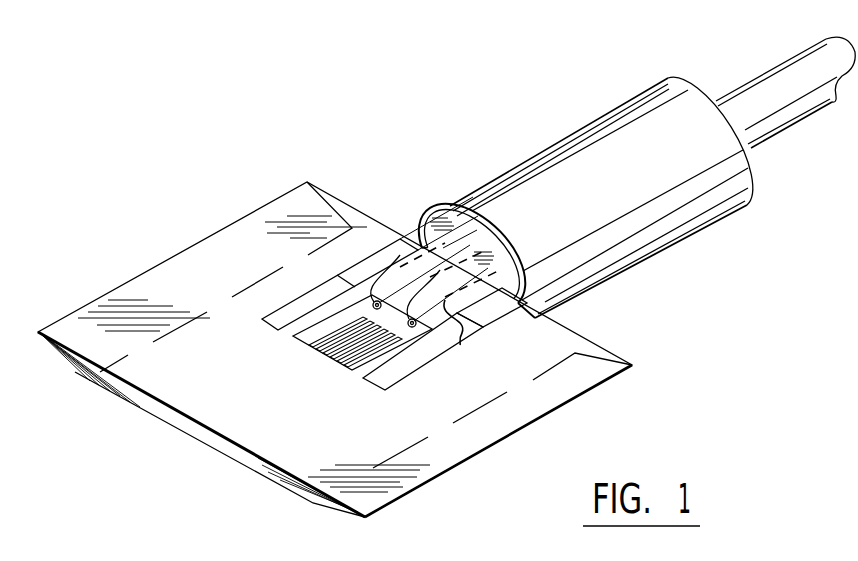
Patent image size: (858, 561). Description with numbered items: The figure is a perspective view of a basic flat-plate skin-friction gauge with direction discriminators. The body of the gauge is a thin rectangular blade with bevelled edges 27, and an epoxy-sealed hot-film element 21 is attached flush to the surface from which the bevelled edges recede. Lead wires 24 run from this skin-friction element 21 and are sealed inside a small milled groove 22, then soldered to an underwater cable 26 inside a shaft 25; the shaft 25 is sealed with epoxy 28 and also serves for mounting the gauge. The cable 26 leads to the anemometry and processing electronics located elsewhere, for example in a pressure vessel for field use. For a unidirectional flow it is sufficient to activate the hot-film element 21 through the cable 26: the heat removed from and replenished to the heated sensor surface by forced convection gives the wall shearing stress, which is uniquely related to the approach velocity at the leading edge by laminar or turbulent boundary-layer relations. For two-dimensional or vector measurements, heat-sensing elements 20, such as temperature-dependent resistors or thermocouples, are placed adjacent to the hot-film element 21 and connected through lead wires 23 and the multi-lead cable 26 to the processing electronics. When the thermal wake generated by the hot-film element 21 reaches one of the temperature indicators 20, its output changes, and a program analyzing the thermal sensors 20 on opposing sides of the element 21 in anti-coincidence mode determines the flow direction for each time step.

The heat-sensing elements 20 is at (264, 328).
The hot-film element 21 is at (330, 362).
The milled groove 22 is at (483, 327).
The lead wires 23 is at (405, 275).
The lead wires 24 is at (455, 258).
The shaft 25 is at (685, 228).
The cable 26 is at (787, 57).
The thin rectangular blade with bevelled edges 27 is at (182, 292).
The epoxy 28 is at (447, 228).